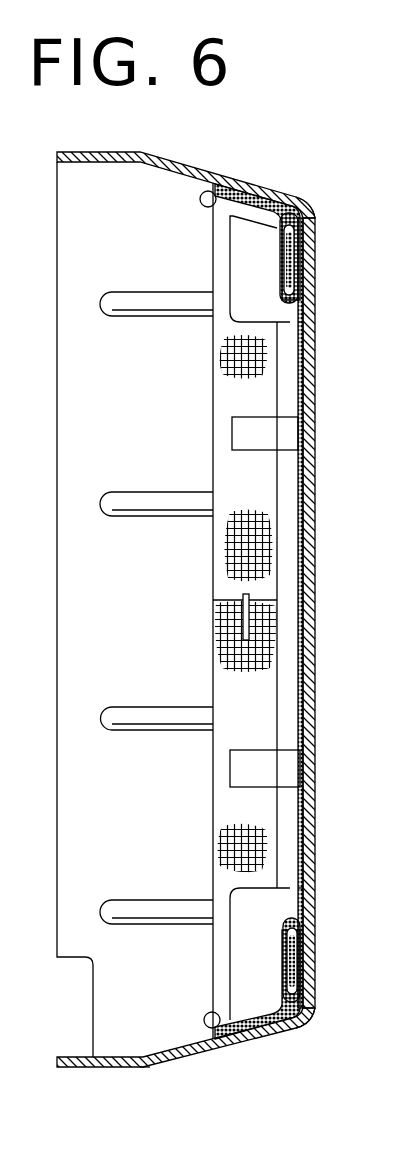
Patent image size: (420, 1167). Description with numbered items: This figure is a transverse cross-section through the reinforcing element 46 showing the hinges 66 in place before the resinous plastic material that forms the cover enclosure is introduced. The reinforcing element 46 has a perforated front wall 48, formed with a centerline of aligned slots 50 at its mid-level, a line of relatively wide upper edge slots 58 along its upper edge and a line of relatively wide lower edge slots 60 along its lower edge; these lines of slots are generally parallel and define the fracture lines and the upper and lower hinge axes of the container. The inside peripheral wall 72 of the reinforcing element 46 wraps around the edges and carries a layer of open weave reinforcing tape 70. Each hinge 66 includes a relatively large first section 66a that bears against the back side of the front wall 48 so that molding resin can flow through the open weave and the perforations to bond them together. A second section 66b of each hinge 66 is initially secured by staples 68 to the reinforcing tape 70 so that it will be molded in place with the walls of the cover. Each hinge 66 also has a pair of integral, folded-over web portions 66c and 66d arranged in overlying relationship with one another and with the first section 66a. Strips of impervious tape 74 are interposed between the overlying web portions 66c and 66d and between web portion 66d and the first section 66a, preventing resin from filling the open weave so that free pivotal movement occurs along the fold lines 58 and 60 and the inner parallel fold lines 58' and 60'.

The reinforcing element 46 is at (146, 1072).
The front wall 48 is at (313, 528).
The center line of slots 50 is at (310, 624).
The upper edge slots 58 is at (341, 215).
The inner parallel fold line 58' is at (333, 329).
The lower edge slots 60 is at (322, 1025).
The inner parallel fold line 60' is at (336, 890).
The hinge 66 is at (266, 236).
The first hinge section 66a is at (298, 372).
The second hinge section 66b is at (214, 192).
The folded over web portion 66c is at (285, 280).
The folded over web portion 66d is at (305, 250).
The staples 68 is at (243, 614).
The open weave reinforcing tape 70 is at (262, 195).
The inside peripheral wall 72 is at (180, 152).
The impervious tape strips 74 is at (284, 256).